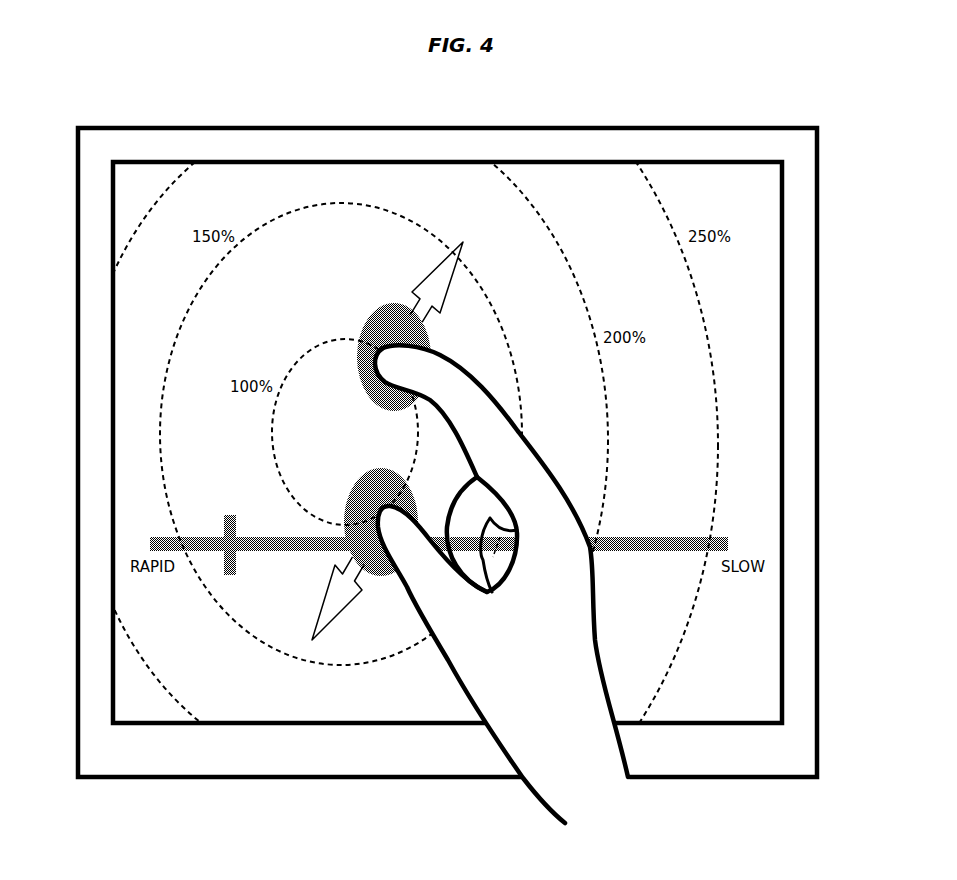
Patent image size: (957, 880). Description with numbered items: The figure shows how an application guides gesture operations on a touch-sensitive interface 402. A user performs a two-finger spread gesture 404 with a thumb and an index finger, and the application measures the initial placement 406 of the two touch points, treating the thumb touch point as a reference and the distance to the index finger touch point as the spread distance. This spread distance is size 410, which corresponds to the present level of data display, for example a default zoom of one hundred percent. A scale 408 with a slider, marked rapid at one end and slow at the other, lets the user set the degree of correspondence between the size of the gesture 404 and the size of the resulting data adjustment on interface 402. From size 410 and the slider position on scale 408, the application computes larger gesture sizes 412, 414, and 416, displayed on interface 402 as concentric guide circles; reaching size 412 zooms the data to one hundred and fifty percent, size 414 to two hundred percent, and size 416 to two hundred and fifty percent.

The interface 402 is at (783, 200).
The gesture 404 is at (437, 277).
The initial placement 406 is at (374, 477).
The scale 408 is at (230, 516).
The size 410 is at (286, 473).
The size 412 is at (510, 336).
The size 414 is at (579, 275).
The size 416 is at (670, 208).